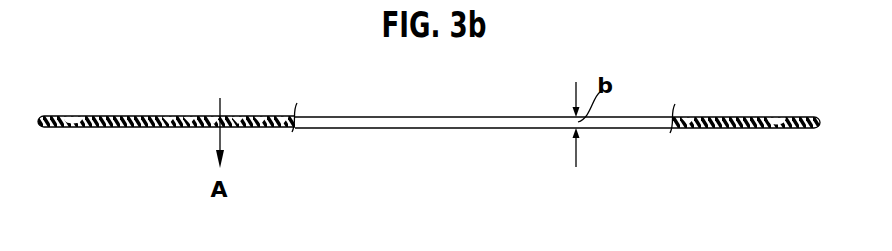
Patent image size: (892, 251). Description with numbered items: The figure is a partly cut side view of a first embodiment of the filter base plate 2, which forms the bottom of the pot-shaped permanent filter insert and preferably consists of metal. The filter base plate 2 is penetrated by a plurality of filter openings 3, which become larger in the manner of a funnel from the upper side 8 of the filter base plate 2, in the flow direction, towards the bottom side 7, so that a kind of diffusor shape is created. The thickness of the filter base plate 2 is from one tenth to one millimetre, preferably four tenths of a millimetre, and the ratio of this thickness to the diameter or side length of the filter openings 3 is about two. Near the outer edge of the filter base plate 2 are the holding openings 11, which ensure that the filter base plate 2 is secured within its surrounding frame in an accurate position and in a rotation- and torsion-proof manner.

The filter base plate 2 is at (443, 117).
The filter openings 3 is at (193, 127).
The bottom side 7 is at (383, 128).
The upper side 8 is at (183, 116).
The holding openings 11 is at (77, 127).